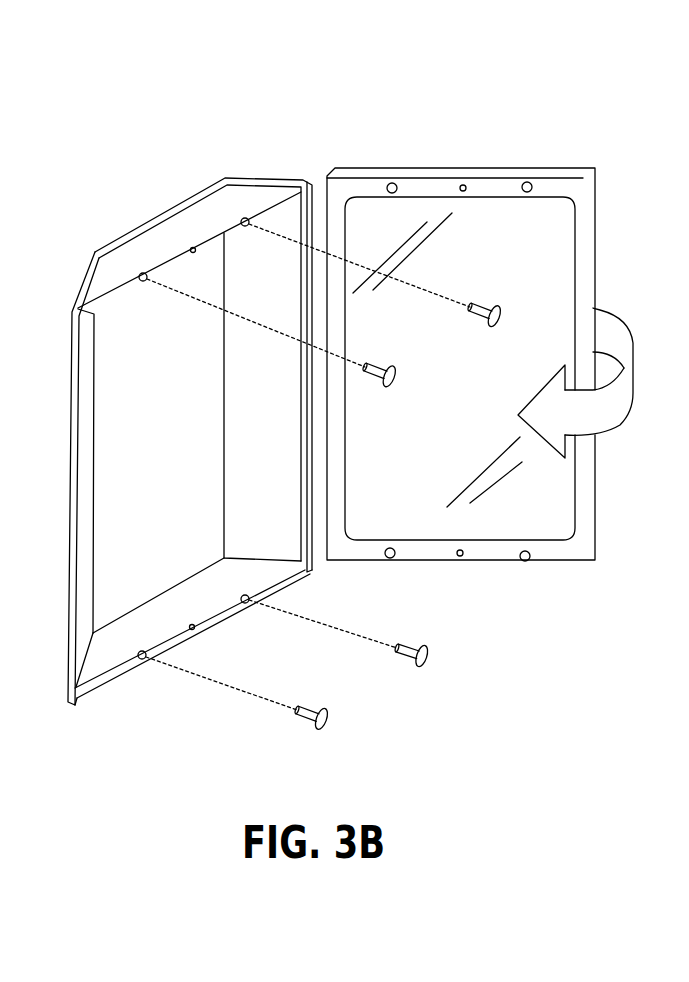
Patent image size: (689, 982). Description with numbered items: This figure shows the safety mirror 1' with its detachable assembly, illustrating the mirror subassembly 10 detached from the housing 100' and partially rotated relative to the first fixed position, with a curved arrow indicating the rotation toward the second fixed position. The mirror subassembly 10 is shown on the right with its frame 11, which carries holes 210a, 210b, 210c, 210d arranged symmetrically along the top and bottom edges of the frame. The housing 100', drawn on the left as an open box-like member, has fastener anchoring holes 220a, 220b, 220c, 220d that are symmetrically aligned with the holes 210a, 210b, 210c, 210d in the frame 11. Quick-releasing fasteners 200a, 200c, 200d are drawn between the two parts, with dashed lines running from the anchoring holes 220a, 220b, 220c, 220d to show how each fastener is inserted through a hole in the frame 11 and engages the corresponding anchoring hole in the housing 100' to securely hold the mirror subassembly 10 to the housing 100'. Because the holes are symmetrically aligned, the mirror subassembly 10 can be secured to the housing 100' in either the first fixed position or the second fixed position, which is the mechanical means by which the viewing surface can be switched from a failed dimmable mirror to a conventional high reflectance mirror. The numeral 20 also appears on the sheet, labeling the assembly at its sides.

The safety mirror 1' is at (344, 438).
The hinge 20 is at (0, 375).
The housing 100' is at (201, 431).
The mirror subassembly 10 is at (555, 268).
The frame 11 is at (582, 190).
The fastener anchoring hole 220a is at (140, 276).
The fastener anchoring hole 220b is at (244, 219).
The fastener anchoring hole 220c is at (142, 661).
The fastener anchoring hole 220d is at (250, 596).
The hole 210a is at (392, 183).
The hole 210b is at (525, 182).
The hole 210c is at (391, 558).
The hole 210d is at (525, 561).
The quick-releasing fastener 200a is at (500, 318).
The quick-releasing fastener 200c is at (326, 719).
The quick-releasing fastener 200d is at (428, 658).